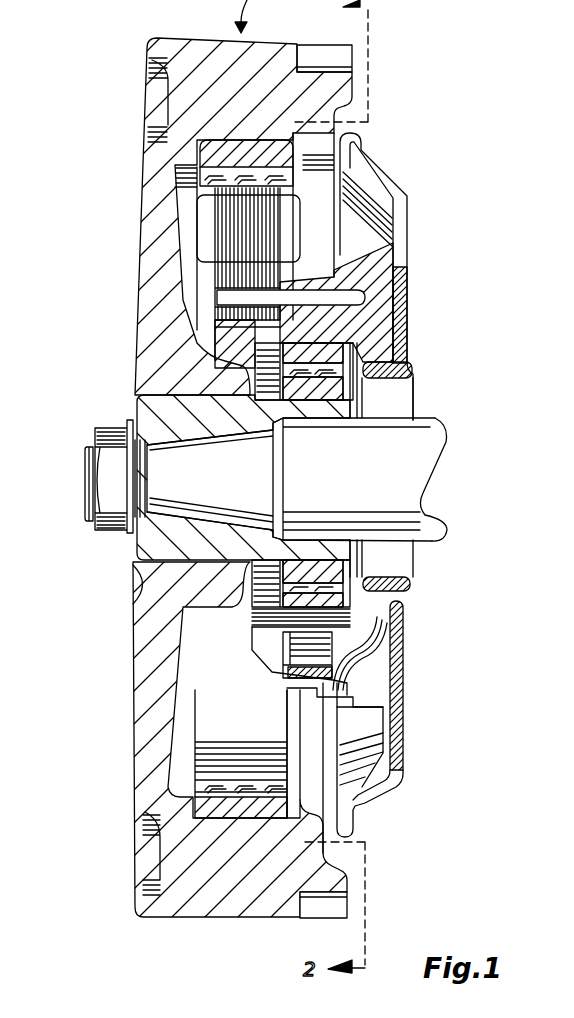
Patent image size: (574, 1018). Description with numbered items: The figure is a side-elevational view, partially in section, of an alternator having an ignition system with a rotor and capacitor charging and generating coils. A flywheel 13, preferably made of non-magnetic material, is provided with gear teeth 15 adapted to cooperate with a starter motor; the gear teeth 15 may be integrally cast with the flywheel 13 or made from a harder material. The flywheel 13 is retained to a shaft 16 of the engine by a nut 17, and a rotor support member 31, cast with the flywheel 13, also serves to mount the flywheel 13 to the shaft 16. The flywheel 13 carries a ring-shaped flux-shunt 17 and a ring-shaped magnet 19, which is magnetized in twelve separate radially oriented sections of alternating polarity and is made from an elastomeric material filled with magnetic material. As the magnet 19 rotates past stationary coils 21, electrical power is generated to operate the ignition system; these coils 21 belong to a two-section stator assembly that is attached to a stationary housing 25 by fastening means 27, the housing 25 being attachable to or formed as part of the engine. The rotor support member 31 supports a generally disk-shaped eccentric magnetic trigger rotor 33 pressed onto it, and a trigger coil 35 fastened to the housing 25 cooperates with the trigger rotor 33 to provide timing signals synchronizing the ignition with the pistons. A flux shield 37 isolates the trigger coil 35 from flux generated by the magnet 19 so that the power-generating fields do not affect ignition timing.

The flywheel 13 is at (195, 43).
The gear teeth 15 is at (323, 46).
The shaft 16 is at (170, 483).
The nut 17 is at (208, 156).
The ring-shaped magnet 19 is at (207, 182).
The coils 21 is at (207, 232).
The stationary housing 25 is at (397, 207).
The fastening means 27 is at (365, 298).
The rotor support member 31 is at (142, 410).
The eccentric magnetic trigger rotor 33 is at (402, 633).
The trigger coil 35 is at (348, 658).
The flux shield 37 is at (282, 653).